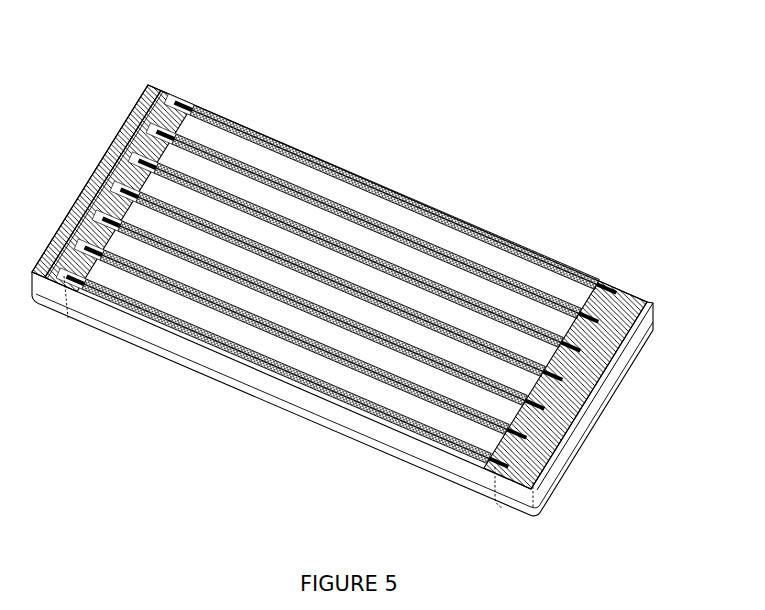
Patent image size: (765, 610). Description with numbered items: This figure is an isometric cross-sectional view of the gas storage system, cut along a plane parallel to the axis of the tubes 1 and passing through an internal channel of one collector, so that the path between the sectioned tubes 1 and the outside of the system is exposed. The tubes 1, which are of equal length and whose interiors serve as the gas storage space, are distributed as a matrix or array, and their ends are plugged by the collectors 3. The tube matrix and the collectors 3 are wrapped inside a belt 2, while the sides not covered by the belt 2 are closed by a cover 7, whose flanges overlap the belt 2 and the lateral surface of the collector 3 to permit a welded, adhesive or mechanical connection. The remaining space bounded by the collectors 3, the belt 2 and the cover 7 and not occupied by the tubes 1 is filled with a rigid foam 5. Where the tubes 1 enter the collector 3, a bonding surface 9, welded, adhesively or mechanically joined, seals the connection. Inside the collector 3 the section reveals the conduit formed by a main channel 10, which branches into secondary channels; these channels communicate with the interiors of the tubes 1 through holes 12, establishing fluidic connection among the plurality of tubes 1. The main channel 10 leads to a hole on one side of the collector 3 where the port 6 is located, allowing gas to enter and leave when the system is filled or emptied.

The tubes 1 is at (339, 284).
The belt 2 is at (585, 442).
The collectors 3 is at (112, 134).
The rigid foam 5 is at (357, 178).
The port 6 is at (66, 295).
The cover 7 is at (318, 424).
The bonding surface 9 is at (600, 290).
The main channel 10 is at (147, 89).
The holes 12 is at (182, 97).